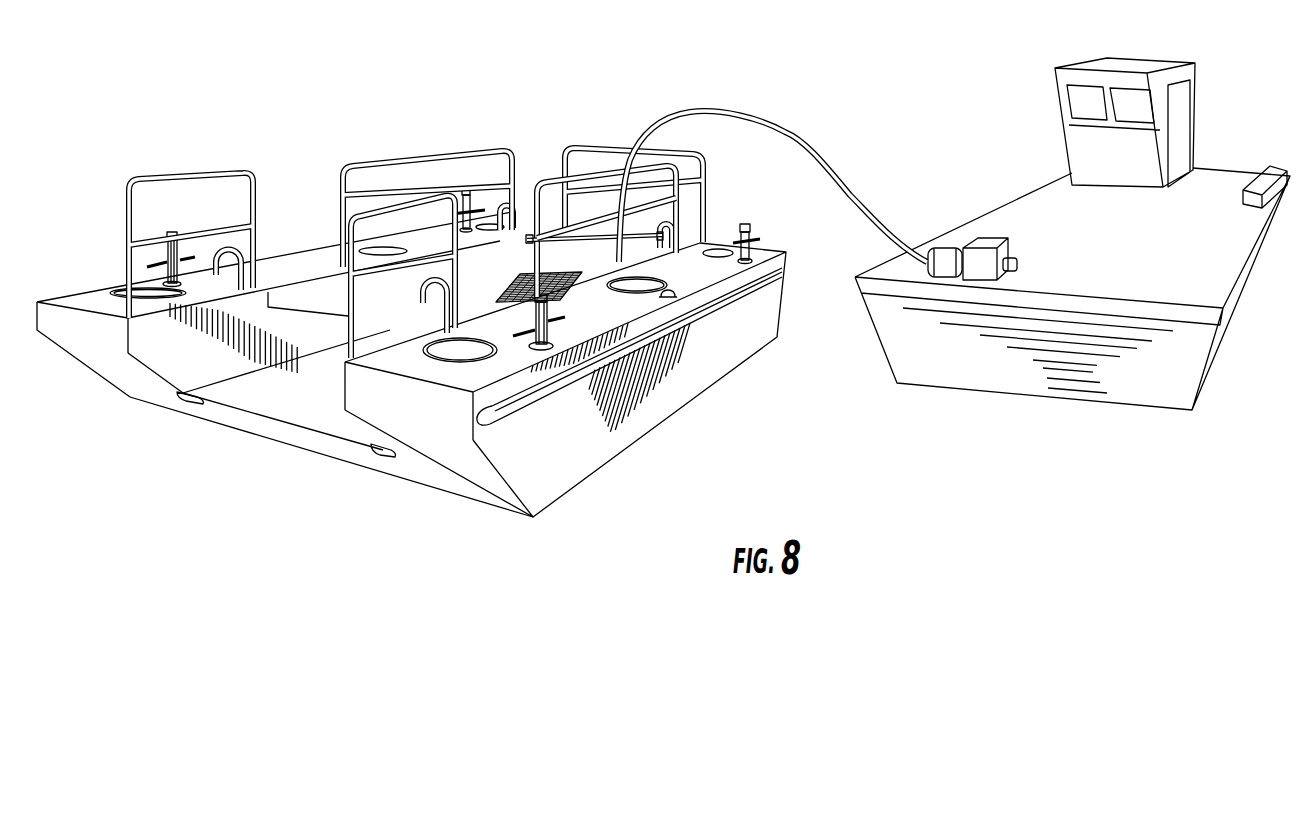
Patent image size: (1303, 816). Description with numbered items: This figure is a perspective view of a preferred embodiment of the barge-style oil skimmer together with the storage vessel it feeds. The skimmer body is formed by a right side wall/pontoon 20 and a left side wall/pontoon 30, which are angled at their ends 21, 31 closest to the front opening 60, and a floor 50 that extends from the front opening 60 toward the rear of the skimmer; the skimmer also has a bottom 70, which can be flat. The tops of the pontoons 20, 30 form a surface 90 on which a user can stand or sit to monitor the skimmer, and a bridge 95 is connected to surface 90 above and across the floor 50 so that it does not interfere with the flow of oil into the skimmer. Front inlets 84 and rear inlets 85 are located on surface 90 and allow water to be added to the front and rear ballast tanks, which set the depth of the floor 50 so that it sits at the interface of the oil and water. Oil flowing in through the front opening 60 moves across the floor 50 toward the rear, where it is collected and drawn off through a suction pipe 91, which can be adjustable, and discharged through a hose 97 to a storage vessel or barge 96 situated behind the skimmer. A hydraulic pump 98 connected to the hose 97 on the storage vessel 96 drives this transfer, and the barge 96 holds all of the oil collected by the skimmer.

The right side wall/pontoon 20 is at (215, 376).
The angled end of right side wall/pontoon 21 is at (115, 368).
The left side wall/pontoon 30 is at (584, 464).
The angled end of left side wall/pontoon 31 is at (458, 473).
The floor 50 is at (323, 402).
The front opening 60 is at (253, 402).
The bottom 70 is at (703, 387).
The front inlet 84 is at (533, 319).
The rear inlet 85 is at (748, 236).
The surface 90 is at (296, 265).
The suction pipe 91 is at (613, 207).
The bridge 95 is at (404, 307).
The storage vessel/barge 96 is at (1007, 220).
The hose 97 is at (812, 148).
The hydraulic pump 98 is at (950, 273).